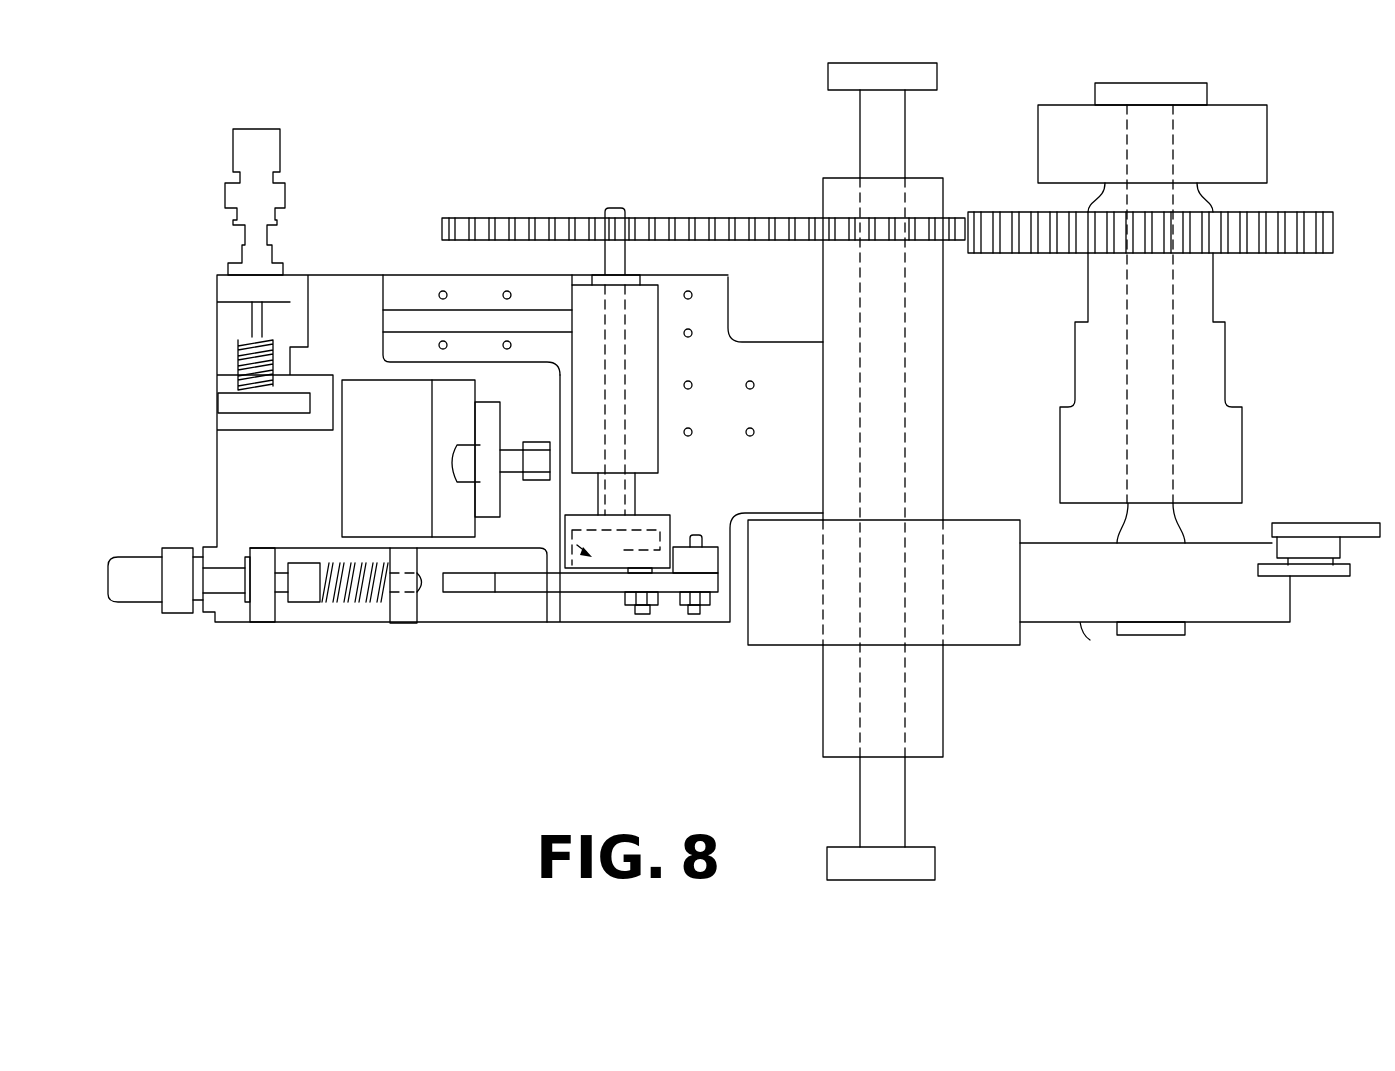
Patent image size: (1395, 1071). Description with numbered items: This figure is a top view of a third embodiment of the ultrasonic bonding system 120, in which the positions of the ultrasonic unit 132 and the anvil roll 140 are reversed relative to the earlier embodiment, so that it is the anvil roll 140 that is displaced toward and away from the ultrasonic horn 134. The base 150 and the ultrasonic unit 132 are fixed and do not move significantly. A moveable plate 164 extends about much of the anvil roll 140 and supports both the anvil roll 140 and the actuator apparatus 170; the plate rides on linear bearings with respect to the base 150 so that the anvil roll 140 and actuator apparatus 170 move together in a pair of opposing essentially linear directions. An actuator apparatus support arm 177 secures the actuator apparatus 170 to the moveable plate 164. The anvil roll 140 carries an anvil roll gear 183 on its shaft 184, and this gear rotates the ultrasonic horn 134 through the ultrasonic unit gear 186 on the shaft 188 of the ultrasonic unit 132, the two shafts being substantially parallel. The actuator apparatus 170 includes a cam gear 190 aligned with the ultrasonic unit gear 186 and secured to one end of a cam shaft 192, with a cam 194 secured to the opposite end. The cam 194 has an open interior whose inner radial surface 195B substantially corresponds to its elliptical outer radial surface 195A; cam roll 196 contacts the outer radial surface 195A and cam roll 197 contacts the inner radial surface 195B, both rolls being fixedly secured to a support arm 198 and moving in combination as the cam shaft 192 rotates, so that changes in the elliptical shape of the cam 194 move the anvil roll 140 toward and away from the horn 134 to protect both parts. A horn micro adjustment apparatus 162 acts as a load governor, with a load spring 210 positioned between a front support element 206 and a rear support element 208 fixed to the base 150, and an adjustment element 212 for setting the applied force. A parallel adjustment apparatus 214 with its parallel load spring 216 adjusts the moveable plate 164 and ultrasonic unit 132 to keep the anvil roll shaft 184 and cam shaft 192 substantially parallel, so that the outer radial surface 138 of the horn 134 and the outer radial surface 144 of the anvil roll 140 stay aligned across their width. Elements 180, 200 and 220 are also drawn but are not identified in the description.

The ultrasonic system 120 is at (1113, 715).
The ultrasonic unit 132 is at (1240, 88).
The ultrasonic horn 134 is at (1080, 625).
The outer radial surface 138 is at (1308, 591).
The anvil roll 140 is at (988, 645).
The outer radial surface 144 is at (1038, 527).
The base 150 is at (215, 470).
The horn micro adjustment apparatus 162 is at (270, 638).
The moveable plate 164 is at (377, 293).
The actuator apparatus 170 is at (680, 316).
The actuator apparatus support arm 177 is at (485, 305).
The limit switch 180 is at (1317, 543).
The anvil roll gear 183 is at (808, 218).
The shaft 184 is at (860, 138).
The ultrasonic unit gear 186 is at (1283, 212).
The shaft 188 is at (1175, 388).
The cam gear 190 is at (485, 218).
The cam shaft 192 is at (628, 262).
The cam 194 is at (650, 513).
The outer radial surface 195A is at (690, 520).
The inner radial surface 195B is at (595, 570).
The cam roll 196 is at (713, 547).
The cam roll 197 is at (612, 550).
The support arm 198 is at (670, 600).
The side plate 200 is at (728, 300).
The front support element 206 is at (418, 602).
The rear support element 208 is at (250, 548).
The load spring 210 is at (350, 604).
The adjustment element 212 is at (305, 604).
The parallel adjustment apparatus 214 is at (300, 146).
The parallel load spring 216 is at (240, 355).
The motor block 220 is at (340, 477).